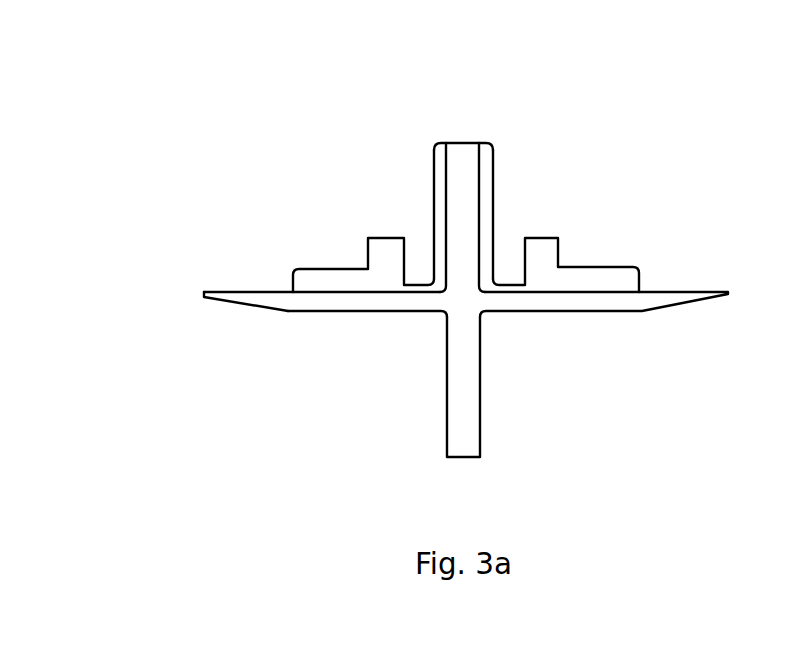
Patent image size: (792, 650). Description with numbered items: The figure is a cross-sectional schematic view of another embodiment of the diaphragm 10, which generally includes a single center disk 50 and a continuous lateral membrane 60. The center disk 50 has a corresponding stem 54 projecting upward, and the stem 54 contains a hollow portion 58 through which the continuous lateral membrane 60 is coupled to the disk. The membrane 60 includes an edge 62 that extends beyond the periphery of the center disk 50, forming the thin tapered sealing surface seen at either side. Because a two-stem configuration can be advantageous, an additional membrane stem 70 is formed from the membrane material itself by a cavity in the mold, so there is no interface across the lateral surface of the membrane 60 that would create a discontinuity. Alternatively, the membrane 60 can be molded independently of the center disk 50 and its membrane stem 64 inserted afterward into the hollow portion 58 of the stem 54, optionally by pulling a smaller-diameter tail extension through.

The diaphragm 10 is at (406, 270).
The center disk 50 is at (621, 266).
The stem 54 is at (496, 173).
The hollow portion 58 is at (461, 172).
The continuous lateral membrane 60 is at (356, 314).
The edge 62 is at (203, 298).
The membrane stem 64 is at (479, 137).
The membrane stem 70 is at (447, 458).